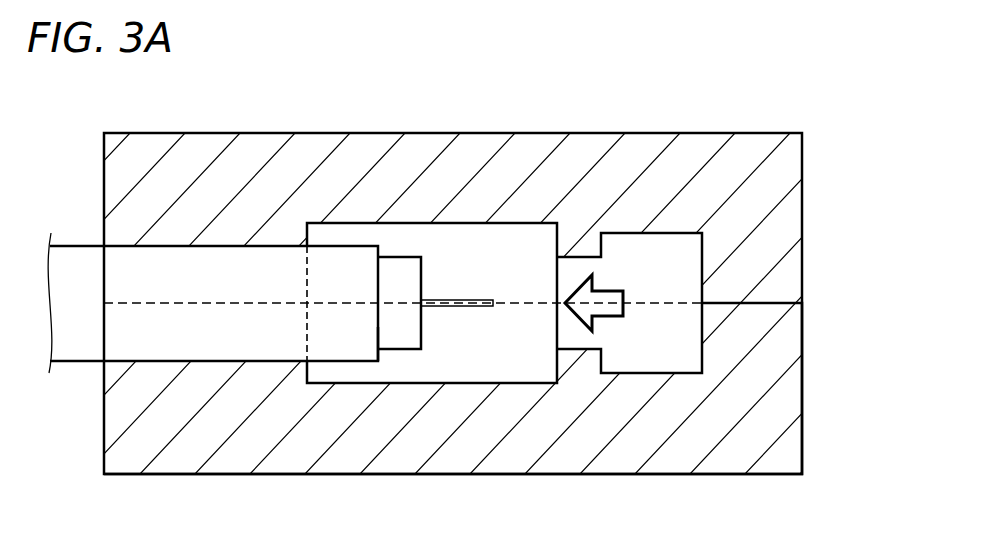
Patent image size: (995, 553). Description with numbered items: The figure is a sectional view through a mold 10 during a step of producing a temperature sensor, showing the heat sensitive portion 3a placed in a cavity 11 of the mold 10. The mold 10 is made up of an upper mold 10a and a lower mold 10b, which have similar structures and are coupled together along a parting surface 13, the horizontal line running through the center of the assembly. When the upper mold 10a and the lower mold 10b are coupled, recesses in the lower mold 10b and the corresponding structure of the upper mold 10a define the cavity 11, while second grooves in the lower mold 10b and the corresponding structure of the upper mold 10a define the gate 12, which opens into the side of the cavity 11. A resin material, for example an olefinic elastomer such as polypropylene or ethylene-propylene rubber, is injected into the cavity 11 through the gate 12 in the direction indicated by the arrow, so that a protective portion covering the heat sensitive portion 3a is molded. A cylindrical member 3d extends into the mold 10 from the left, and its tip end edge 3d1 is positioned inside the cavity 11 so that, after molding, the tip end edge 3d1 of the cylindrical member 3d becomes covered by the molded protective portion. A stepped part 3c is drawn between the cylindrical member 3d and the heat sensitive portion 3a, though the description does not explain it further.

The heat sensitive portion 3a is at (463, 300).
The needle hub 3c is at (399, 270).
The cylindrical member 3d is at (230, 270).
The tip end edge 3d1 is at (382, 327).
The mold 10 is at (638, 82).
The upper mold 10a is at (660, 148).
The lower mold 10b is at (730, 317).
The cavity 11 is at (472, 363).
The gate 12 is at (572, 335).
The parting surface 13 is at (218, 303).